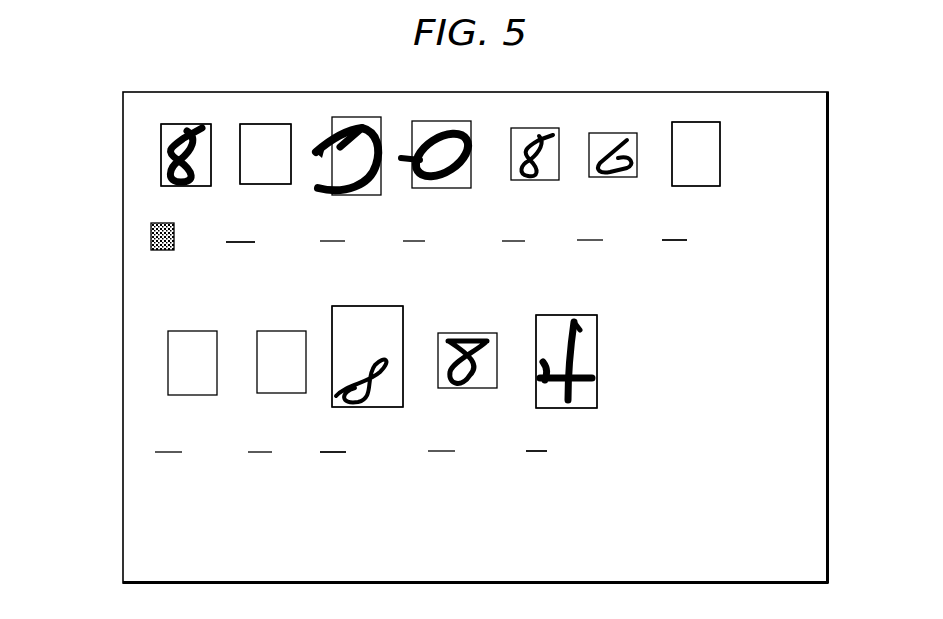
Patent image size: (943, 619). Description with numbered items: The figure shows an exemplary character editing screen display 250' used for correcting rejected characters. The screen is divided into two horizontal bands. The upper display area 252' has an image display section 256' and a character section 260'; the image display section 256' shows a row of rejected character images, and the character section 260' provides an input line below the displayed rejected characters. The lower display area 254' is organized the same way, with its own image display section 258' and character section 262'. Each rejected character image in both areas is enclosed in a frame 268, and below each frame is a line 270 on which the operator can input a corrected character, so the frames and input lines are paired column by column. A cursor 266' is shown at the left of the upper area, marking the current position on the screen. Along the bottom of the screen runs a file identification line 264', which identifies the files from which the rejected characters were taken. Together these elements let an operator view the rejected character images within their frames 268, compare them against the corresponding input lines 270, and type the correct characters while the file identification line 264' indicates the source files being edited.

The character editing screen display 250' is at (429, 315).
The upper display area 252' is at (375, 156).
The lower display area 254' is at (315, 357).
The image display section 256' is at (387, 156).
The image display section 258' is at (313, 383).
The character section 260' is at (360, 267).
The character section 262' is at (296, 480).
The file identification line 264' is at (327, 567).
The cursor 266' is at (108, 234).
The frame 268 is at (248, 124).
The line 270 is at (240, 243).